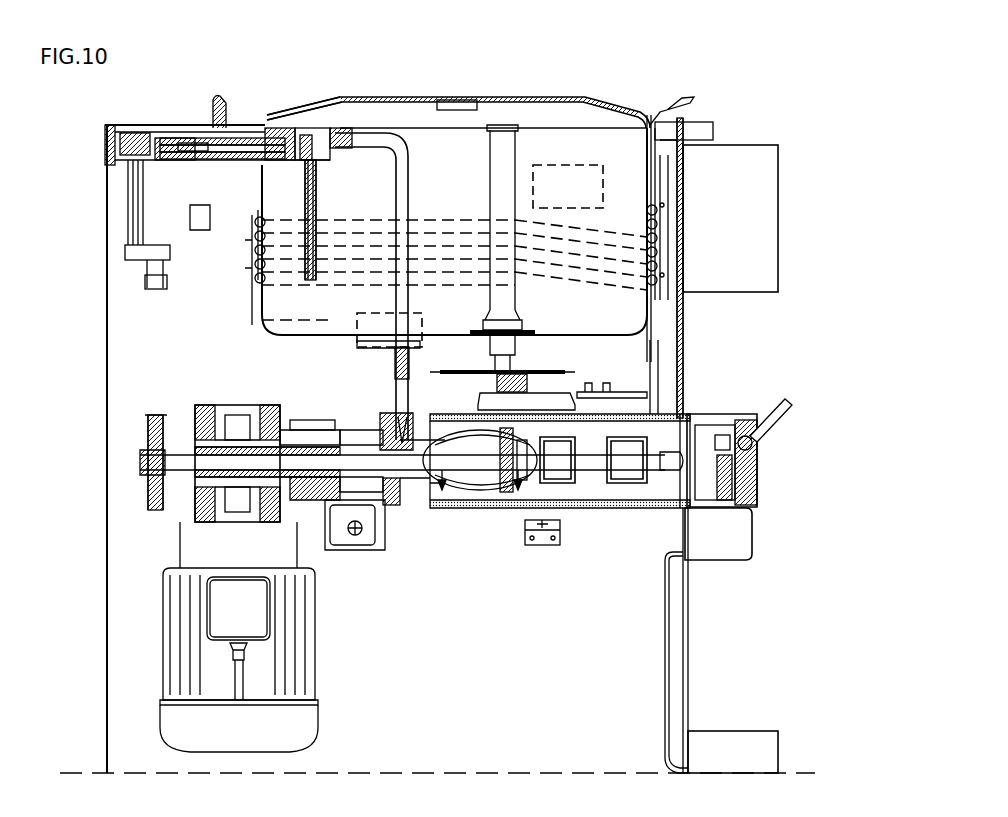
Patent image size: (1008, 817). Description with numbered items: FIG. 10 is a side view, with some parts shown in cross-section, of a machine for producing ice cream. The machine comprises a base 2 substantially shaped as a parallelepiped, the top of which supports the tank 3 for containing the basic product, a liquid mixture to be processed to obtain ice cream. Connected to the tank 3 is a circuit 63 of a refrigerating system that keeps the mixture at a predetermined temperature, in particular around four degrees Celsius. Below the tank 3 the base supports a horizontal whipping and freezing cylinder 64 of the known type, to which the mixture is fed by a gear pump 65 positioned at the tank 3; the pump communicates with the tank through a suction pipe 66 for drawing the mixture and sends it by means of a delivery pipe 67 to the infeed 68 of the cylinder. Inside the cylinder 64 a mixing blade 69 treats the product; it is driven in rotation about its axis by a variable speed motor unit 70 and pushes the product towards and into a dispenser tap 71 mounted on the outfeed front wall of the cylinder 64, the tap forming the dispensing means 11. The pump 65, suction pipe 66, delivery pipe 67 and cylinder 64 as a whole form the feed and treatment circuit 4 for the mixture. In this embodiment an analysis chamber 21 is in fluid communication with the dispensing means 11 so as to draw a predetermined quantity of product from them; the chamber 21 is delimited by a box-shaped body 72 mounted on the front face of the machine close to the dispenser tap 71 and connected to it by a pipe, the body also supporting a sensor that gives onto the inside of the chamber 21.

The base 2 is at (105, 652).
The tank 3 is at (539, 143).
The feed and treatment circuit 4 is at (300, 207).
The dispensing means 11 is at (741, 418).
The analysis chamber 21 is at (380, 320).
The circuit of a refrigerating system 63 is at (605, 240).
The whipping and freezing cylinder 64 is at (630, 457).
The gear pump 65 is at (205, 150).
The suction pipe 66 is at (300, 250).
The delivery pipe 67 is at (408, 150).
The infeed 68 is at (392, 417).
The mixing blade 69 is at (462, 505).
The variable speed motor unit 70 is at (207, 460).
The dispenser tap 71 is at (760, 468).
The box-shaped body 72 is at (568, 175).